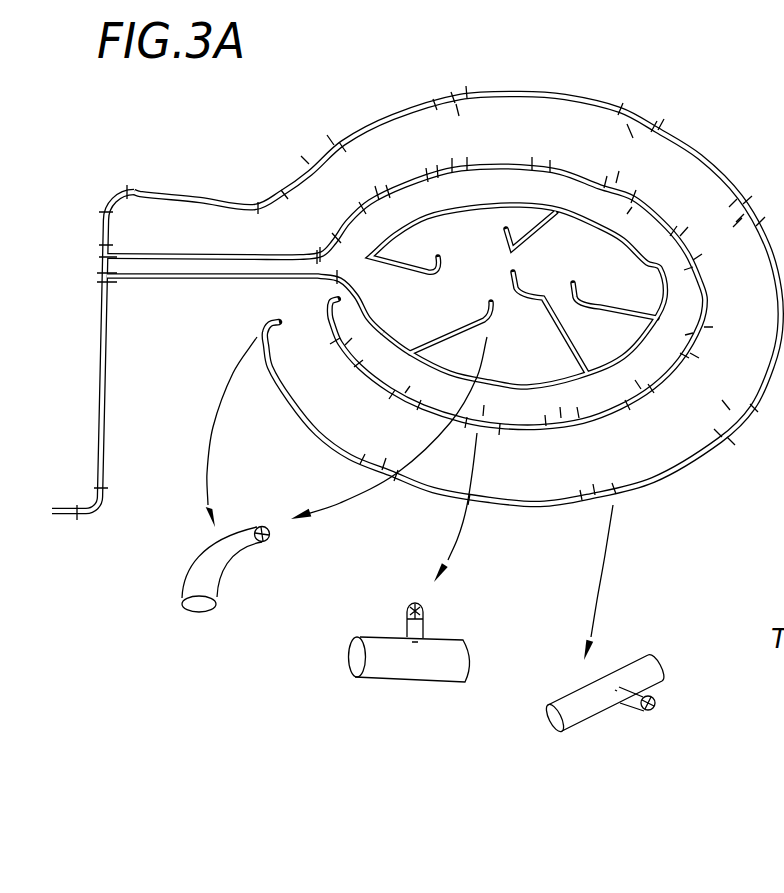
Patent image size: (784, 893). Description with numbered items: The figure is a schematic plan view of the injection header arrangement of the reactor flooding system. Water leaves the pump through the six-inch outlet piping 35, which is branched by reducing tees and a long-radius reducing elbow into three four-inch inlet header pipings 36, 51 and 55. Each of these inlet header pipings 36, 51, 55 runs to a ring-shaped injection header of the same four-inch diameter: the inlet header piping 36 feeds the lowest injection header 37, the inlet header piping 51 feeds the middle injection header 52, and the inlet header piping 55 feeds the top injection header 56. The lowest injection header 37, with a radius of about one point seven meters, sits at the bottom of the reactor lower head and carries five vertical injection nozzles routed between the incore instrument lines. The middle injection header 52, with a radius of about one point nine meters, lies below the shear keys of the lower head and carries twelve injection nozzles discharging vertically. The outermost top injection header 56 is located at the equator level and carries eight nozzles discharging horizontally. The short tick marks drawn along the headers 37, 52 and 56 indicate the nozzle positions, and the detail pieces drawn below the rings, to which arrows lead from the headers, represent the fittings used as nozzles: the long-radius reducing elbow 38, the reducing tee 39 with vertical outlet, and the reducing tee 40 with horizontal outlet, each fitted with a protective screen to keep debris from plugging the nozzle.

The outlet piping 35 is at (107, 387).
The inlet header piping 36 is at (152, 282).
The lowest injection header 37 is at (667, 293).
The elbow fitting 38 is at (248, 525).
The tee fitting 39 is at (467, 637).
The side outlet fitting 40 is at (638, 657).
The inlet header piping 51 is at (147, 253).
The middle injection header 52 is at (649, 210).
The inlet header piping 55 is at (198, 193).
The top injection header 56 is at (505, 76).